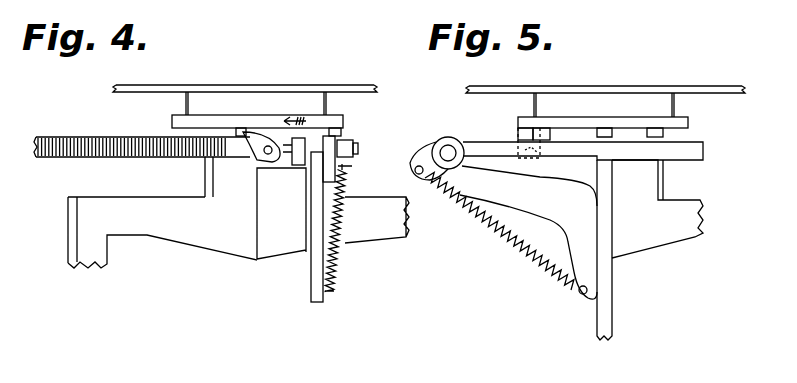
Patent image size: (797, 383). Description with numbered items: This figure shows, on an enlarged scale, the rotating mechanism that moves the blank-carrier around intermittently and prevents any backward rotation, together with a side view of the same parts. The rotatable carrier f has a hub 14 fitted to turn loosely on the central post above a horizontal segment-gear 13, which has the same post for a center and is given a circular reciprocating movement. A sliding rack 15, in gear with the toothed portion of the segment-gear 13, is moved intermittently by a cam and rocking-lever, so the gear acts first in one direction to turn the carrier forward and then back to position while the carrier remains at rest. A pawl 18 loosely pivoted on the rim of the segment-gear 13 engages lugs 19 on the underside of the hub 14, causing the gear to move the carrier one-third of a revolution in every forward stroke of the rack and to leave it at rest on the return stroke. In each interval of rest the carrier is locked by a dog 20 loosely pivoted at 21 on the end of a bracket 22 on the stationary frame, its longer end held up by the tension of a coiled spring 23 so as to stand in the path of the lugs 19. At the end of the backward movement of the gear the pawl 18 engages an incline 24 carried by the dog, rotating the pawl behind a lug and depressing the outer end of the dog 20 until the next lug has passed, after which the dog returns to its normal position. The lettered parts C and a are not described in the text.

In FIG. 4, the rotatable carrier f is at (245, 79).
In FIG. 5, the rotatable carrier f is at (605, 80).
In FIG. 4, the hub 14 is at (188, 112).
In FIG. 5, the hub 14 is at (681, 110).
In FIG. 4, the lugs 19 is at (347, 131).
In FIG. 5, the lugs 19 is at (618, 112).
In FIG. 4, the carriage C is at (221, 128).
In FIG. 5, the carriage C is at (657, 132).
In FIG. 4, the segment-gear 13 is at (176, 158).
In FIG. 5, the segment-gear 13 is at (700, 153).
In FIG. 4, the sliding rack 15 is at (55, 152).
In FIG. 4, the pawl 18 is at (265, 153).
In FIG. 4, the incline 24 is at (281, 168).
In FIG. 5, the incline 24 is at (541, 160).
In FIG. 4, the dog 20 is at (330, 157).
In FIG. 5, the dog 20 is at (515, 145).
In FIG. 4, the pivot 21 is at (356, 149).
In FIG. 5, the pivot 21 is at (447, 151).
In FIG. 4, the bracket 22 is at (313, 290).
In FIG. 5, the bracket 22 is at (536, 234).
In FIG. 4, the coiled spring 23 is at (344, 267).
In FIG. 5, the coiled spring 23 is at (499, 232).
In FIG. 4, the frame a is at (238, 218).
In FIG. 5, the frame a is at (657, 209).